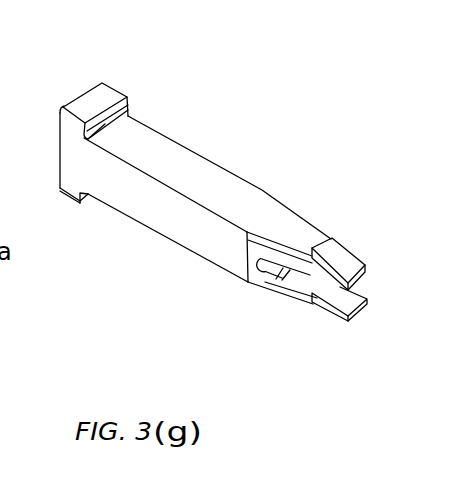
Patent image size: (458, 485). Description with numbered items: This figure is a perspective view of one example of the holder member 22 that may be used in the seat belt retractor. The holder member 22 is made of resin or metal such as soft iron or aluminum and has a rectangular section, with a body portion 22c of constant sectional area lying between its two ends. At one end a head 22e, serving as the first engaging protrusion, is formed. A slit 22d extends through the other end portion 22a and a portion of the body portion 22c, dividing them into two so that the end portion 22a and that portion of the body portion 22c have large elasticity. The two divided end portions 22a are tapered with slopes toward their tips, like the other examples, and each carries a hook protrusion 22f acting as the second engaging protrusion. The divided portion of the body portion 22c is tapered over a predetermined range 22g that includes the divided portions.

The holder member 22 is at (195, 148).
The end portion 22a is at (353, 266).
The body portion 22c is at (138, 207).
The slit 22d is at (297, 276).
The head 22e is at (85, 102).
The hook protrusion 22f is at (332, 239).
The predetermined range 22g is at (267, 283).